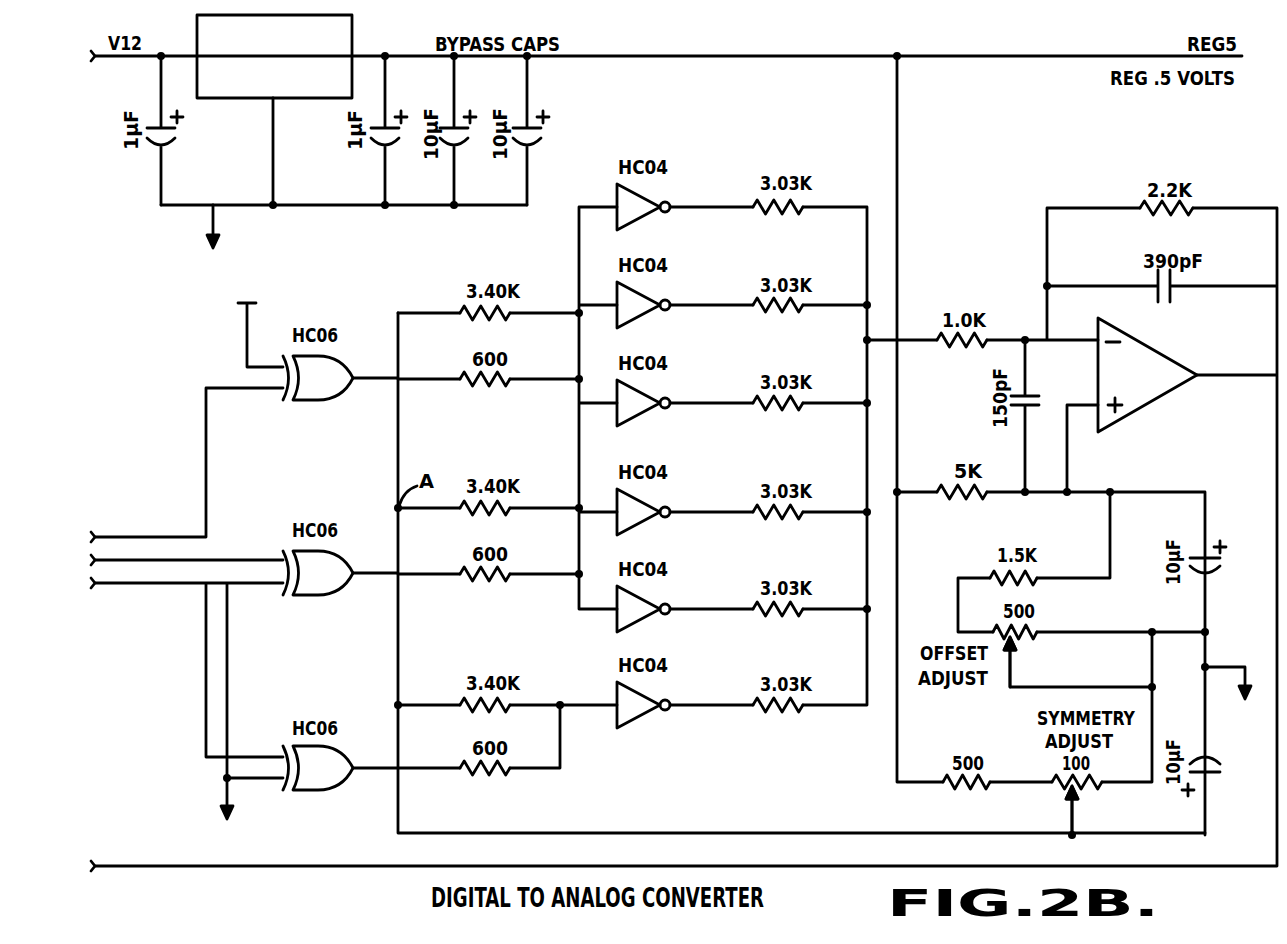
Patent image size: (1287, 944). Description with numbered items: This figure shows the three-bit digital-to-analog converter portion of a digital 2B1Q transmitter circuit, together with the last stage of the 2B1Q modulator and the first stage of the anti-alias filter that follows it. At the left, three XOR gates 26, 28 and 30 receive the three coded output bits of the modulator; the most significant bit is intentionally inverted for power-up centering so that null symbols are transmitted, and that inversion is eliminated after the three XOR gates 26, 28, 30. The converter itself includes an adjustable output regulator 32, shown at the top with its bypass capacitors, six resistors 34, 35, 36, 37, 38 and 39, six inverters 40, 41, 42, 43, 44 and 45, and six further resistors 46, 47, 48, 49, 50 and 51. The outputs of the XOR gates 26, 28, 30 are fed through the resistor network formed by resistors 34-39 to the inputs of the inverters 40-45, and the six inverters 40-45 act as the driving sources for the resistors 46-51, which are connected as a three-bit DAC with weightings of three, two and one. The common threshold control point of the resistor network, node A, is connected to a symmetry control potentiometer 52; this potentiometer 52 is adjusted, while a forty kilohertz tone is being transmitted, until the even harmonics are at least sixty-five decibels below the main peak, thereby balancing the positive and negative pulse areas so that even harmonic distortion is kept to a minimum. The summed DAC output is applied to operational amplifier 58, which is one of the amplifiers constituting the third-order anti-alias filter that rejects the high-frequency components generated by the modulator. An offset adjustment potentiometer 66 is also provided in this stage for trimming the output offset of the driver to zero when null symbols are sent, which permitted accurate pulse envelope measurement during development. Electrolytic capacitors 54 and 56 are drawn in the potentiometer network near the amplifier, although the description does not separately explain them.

The adjustable output regulator 32 is at (297, 54).
The XOR gate 30 is at (335, 368).
The XOR gate 28 is at (337, 562).
The XOR gate 26 is at (335, 754).
The resistor 39 is at (467, 326).
The resistor 38 is at (468, 398).
The resistor 37 is at (468, 525).
The resistor 36 is at (470, 592).
The resistor 35 is at (468, 720).
The resistor 34 is at (470, 785).
The inverter 45 is at (654, 213).
The inverter 44 is at (654, 311).
The inverter 43 is at (652, 409).
The inverter 42 is at (652, 518).
The inverter 41 is at (650, 613).
The inverter 40 is at (646, 718).
The resistor 51 is at (793, 221).
The resistor 50 is at (793, 322).
The resistor 49 is at (793, 419).
The resistor 48 is at (792, 527).
The resistor 47 is at (793, 624).
The resistor 46 is at (793, 727).
The operational amplifier 58 is at (1161, 375).
The 10 microfarad capacitor 56 is at (1228, 571).
The offset adjustment potentiometer 66 is at (1033, 656).
The symmetry control potentiometer 52 is at (1096, 805).
The 10 microfarad capacitor 54 is at (1226, 783).